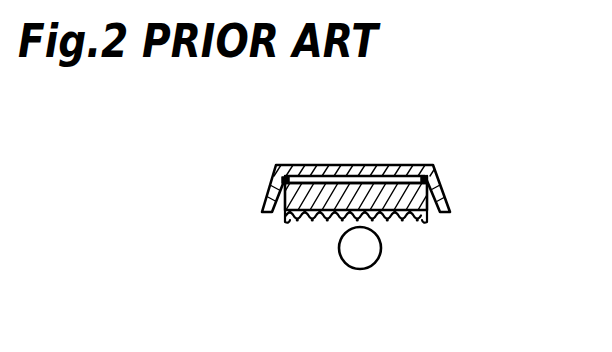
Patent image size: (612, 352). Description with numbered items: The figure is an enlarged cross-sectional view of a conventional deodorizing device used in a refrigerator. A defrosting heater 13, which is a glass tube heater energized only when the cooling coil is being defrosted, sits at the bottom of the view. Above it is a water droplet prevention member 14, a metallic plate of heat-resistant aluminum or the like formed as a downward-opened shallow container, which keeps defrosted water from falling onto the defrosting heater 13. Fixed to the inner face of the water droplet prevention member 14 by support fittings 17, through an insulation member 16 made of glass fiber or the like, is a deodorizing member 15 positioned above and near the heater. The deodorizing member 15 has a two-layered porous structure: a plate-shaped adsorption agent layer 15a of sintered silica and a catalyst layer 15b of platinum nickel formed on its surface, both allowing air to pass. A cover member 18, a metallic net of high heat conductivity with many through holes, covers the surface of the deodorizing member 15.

The defrosting heater 13 is at (359, 269).
The water droplet prevention member 14 is at (333, 165).
The deodorizing member 15 is at (402, 218).
The adsorption agent layer 15a is at (283, 185).
The catalyst layer 15b is at (303, 167).
The insulation member 16 is at (395, 178).
The support fittings 17 is at (285, 222).
The cover member 18 is at (322, 222).